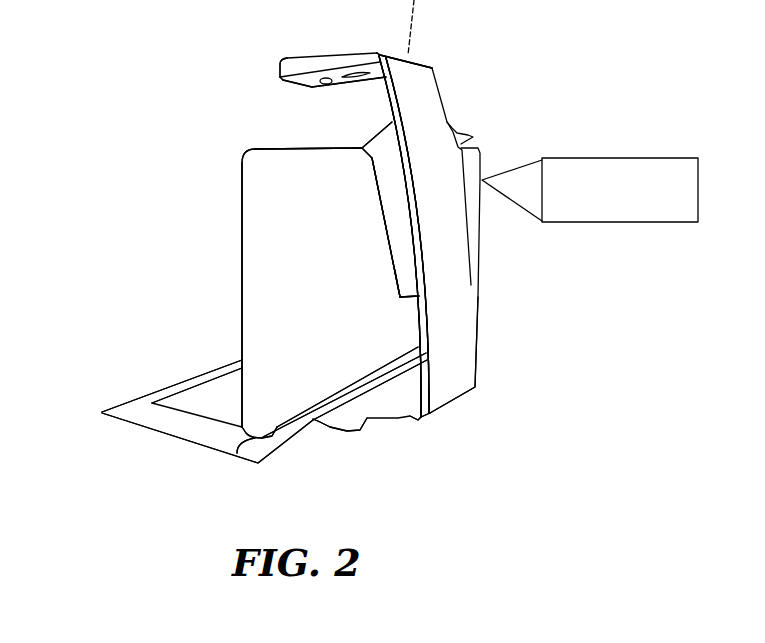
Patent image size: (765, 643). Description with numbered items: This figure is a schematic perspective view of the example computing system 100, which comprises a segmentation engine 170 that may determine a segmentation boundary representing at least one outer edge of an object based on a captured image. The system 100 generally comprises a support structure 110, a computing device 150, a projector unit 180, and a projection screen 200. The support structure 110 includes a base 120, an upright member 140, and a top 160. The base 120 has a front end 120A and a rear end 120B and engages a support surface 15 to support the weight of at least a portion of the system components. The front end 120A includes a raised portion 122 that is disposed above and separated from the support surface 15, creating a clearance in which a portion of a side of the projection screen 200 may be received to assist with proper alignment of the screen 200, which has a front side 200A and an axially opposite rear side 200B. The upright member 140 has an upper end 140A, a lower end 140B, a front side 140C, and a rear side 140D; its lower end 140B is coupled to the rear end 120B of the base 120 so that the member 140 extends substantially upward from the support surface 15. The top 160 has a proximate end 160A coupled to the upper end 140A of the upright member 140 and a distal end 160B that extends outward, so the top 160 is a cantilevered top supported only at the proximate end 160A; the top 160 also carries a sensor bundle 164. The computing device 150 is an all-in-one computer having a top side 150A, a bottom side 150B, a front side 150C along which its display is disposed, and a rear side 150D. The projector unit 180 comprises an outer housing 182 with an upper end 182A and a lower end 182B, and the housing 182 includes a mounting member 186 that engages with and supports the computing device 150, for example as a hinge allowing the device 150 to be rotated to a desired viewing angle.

The support surface 15 is at (83, 465).
The computing system 100 is at (117, 162).
The support structure 110 is at (520, 152).
The base 120 is at (372, 428).
The front end 120A is at (365, 387).
The rear end 120B is at (420, 430).
The raised portion 122 is at (335, 431).
The upright member 140 is at (450, 333).
The upper end 140A is at (433, 63).
The lower end 140B is at (450, 408).
The front side 140C is at (382, 101).
The rear side 140D is at (468, 135).
The computing device 150 is at (238, 172).
The top side 150A is at (300, 148).
The bottom side 150B is at (236, 443).
The front side 150C is at (238, 267).
The rear side 150D is at (320, 233).
The top 160 is at (362, 43).
The proximate end 160A is at (433, 63).
The distal end 160B is at (277, 78).
The sensor bundle 164 is at (296, 84).
The segmentation engine 170 is at (620, 223).
The projector unit 180 is at (421, 227).
The outer housing 182 is at (405, 262).
The upper end 182A is at (402, 116).
The lower end 182B is at (405, 300).
The mounting member 186 is at (371, 172).
The projection screen 200 is at (133, 400).
The front side 200A is at (165, 387).
The rear side 200B is at (270, 457).